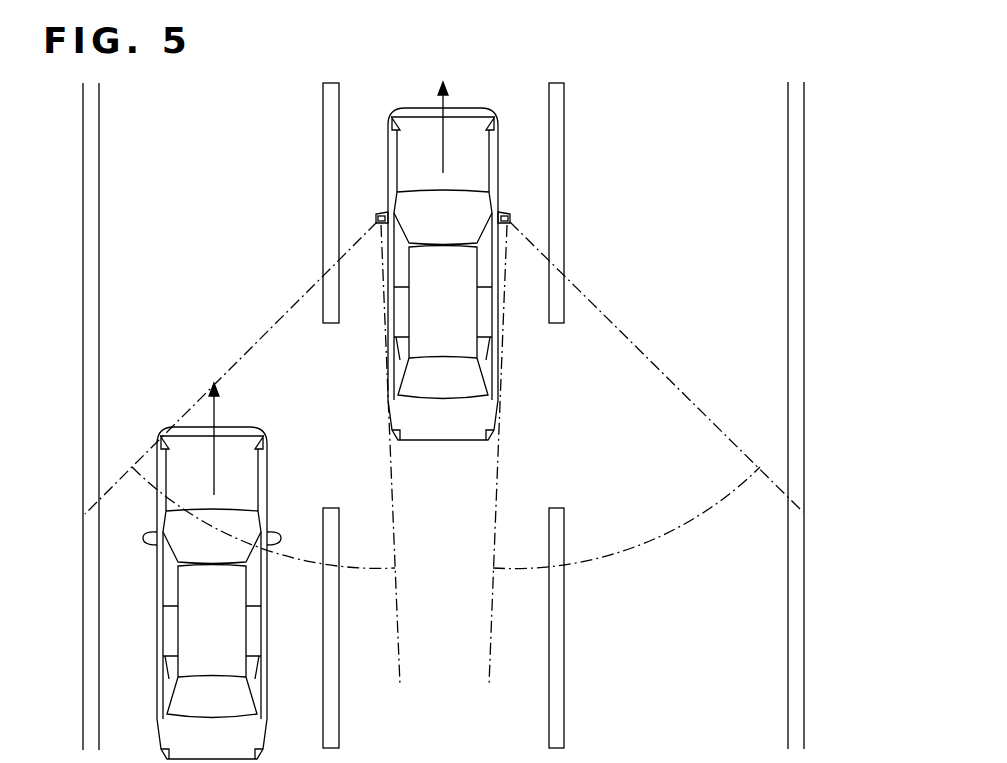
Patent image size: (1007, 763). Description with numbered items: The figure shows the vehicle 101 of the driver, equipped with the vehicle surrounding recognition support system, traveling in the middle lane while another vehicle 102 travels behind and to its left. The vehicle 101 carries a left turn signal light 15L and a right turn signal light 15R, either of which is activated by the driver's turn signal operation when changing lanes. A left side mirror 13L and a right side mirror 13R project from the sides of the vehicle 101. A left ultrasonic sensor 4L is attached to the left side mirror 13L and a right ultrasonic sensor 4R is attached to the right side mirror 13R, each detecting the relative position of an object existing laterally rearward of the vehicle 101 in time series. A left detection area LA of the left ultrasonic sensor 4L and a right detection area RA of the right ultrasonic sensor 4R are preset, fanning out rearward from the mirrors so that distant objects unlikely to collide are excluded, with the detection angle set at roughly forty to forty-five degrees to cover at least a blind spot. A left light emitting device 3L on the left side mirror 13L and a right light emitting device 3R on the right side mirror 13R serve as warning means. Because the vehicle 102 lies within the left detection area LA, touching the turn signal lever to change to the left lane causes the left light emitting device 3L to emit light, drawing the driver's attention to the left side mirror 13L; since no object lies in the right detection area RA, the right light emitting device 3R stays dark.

The vehicle 101 is at (447, 441).
The vehicle 102 is at (160, 664).
The left turn signal light 15L is at (390, 121).
The right turn signal light 15R is at (497, 121).
The left side mirror 13L is at (383, 212).
The right side mirror 13R is at (503, 212).
The left light emitting device 3L is at (374, 216).
The right light emitting device 3R is at (512, 216).
The left ultrasonic sensor 4L is at (378, 228).
The right ultrasonic sensor 4R is at (509, 228).
The left detection area LA is at (299, 567).
The right detection area RA is at (657, 540).